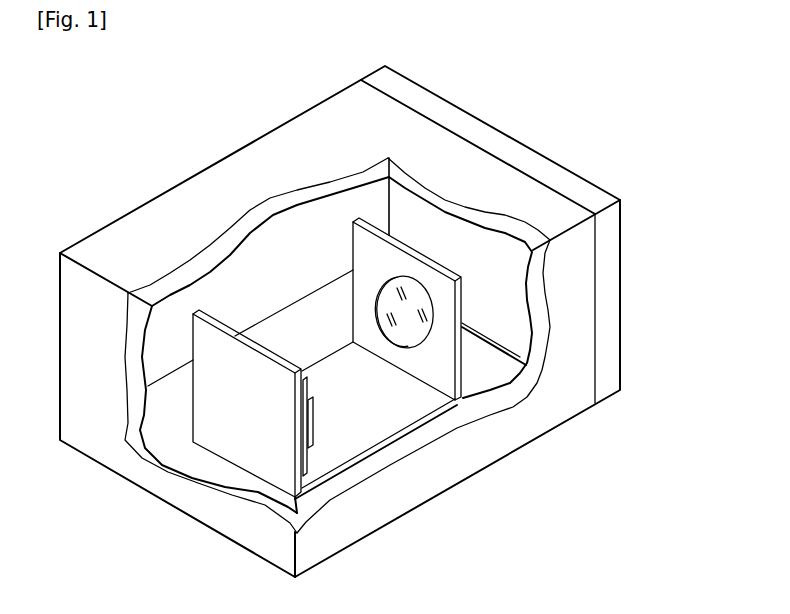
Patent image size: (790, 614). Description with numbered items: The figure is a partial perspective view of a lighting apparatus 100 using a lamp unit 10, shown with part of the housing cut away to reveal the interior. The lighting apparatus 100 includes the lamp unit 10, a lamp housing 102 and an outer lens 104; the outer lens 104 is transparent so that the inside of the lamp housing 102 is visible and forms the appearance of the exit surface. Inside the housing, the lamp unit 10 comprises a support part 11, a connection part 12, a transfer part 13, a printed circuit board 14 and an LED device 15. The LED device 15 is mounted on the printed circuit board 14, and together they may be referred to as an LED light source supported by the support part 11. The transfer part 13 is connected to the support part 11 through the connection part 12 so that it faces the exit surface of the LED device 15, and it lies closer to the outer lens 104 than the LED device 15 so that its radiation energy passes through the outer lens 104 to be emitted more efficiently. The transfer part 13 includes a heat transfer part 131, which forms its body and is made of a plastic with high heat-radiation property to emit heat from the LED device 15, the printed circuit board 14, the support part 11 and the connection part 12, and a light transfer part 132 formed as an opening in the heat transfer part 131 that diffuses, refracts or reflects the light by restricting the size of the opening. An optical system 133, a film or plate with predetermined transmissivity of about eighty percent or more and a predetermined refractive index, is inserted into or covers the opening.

The lighting apparatus 100 is at (190, 146).
The lamp housing 102 is at (123, 230).
The outer lens 104 is at (473, 123).
The lamp unit 10 is at (363, 483).
The support part 11 is at (292, 472).
The connection part 12 is at (387, 446).
The transfer part 13 is at (513, 365).
The heat transfer part 131 is at (441, 359).
The light transfer part 132 is at (433, 329).
The optical system 133 is at (414, 304).
The printed circuit board 14 is at (307, 447).
The LED device 15 is at (312, 420).